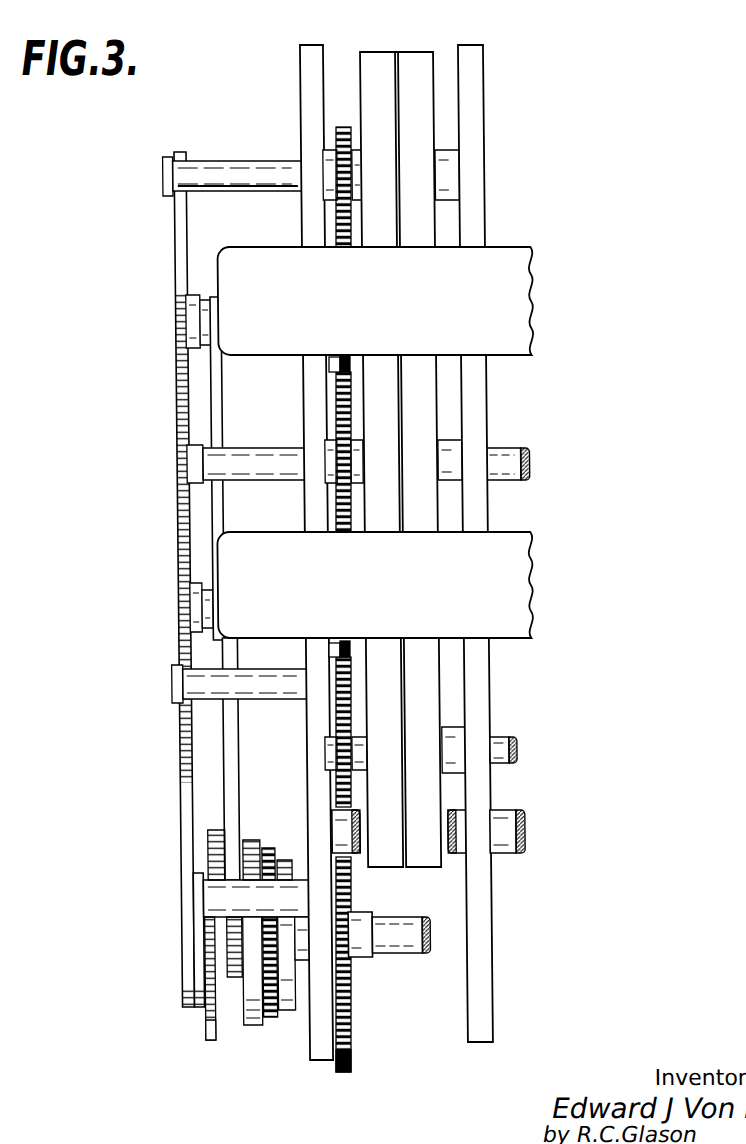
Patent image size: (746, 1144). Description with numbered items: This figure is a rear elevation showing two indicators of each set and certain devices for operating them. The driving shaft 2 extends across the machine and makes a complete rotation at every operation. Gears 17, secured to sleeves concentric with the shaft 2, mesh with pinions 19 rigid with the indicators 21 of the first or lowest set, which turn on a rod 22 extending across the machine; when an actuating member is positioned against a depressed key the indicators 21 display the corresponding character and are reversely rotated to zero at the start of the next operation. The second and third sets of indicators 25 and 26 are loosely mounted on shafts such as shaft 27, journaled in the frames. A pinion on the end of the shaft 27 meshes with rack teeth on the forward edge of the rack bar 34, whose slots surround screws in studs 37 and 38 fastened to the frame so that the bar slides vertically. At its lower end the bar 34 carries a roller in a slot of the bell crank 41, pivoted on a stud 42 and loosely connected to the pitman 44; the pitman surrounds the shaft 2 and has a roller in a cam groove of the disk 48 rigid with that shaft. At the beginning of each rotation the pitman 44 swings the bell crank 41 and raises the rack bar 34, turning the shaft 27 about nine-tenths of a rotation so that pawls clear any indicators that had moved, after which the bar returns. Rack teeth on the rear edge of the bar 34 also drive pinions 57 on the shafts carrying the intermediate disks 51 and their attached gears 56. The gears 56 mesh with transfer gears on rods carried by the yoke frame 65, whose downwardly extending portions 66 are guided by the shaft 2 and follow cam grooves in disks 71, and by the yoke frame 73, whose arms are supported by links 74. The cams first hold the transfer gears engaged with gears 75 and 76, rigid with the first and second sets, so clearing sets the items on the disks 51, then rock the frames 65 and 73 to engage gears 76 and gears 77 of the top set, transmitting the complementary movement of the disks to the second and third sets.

The driving shaft 2 is at (398, 938).
The gears 17 is at (321, 1057).
The pinions 19 is at (328, 752).
The indicators 21 is at (384, 866).
The rod 22 is at (500, 745).
The second set of indicators 25 is at (428, 425).
The third set of indicators 26 is at (418, 52).
The shaft 27 is at (507, 450).
The rack bar 34 is at (173, 522).
The stud 37 is at (208, 690).
The stud 38 is at (236, 187).
The bell crank 41 is at (188, 893).
The stud 42 is at (293, 902).
The pitman 44 is at (196, 938).
The disk 48 is at (203, 1027).
The disks 51 is at (326, 365).
The gears 56 is at (337, 357).
The pinions 57 is at (175, 320).
The yoke shaped frame 65 is at (521, 630).
The downwardly extending portion 66 is at (227, 797).
The disk 71 is at (250, 1027).
The yoke frame 73 is at (530, 350).
The links 74 is at (215, 415).
The gears 75 is at (330, 738).
The gears 76 is at (333, 446).
The gears 77 is at (336, 132).